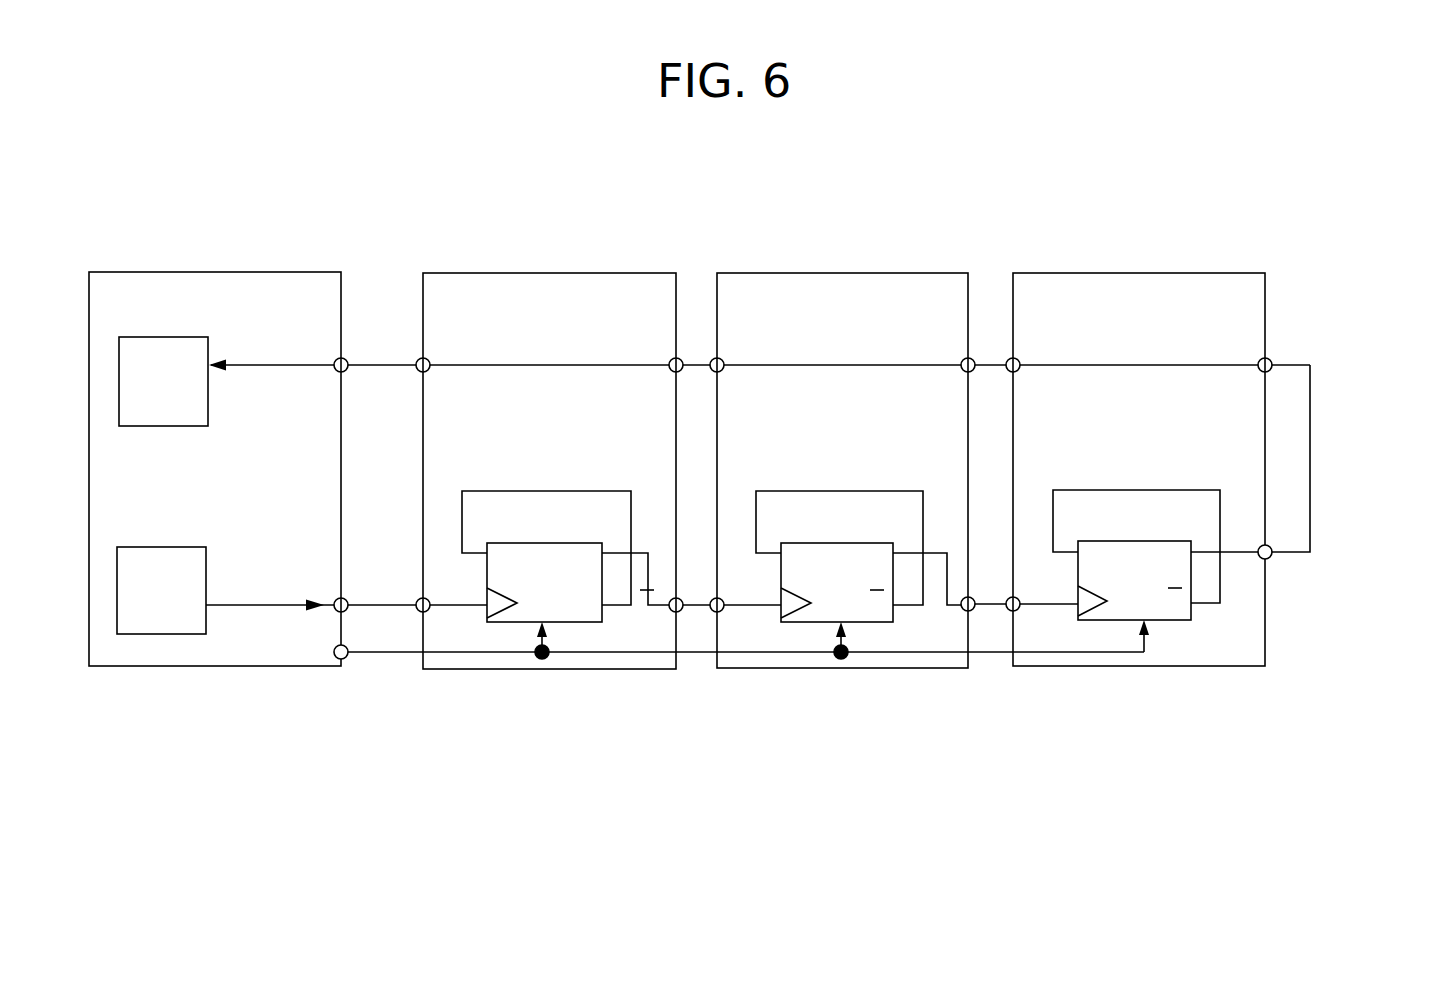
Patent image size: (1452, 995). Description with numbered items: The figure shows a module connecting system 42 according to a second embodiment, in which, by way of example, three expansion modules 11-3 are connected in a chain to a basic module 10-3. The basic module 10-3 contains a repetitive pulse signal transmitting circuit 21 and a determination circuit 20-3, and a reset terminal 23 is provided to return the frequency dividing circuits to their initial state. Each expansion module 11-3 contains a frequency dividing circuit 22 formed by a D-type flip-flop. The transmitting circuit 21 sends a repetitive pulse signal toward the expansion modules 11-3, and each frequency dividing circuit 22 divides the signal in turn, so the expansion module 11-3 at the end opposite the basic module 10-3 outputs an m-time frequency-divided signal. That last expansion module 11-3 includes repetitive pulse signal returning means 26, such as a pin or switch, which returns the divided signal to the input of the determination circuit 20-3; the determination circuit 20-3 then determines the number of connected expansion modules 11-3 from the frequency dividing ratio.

The basic module 10-3 is at (307, 272).
The determination circuit 20-3 is at (140, 337).
The expansion module 11-3 is at (547, 273).
The repetitive pulse signal transmitting circuit 21 is at (160, 634).
The frequency dividing circuit 22 is at (517, 623).
The reset terminal 23 is at (338, 661).
The repetitive pulse signal returning means 26 is at (1310, 455).
The module connecting system 42 is at (1282, 258).